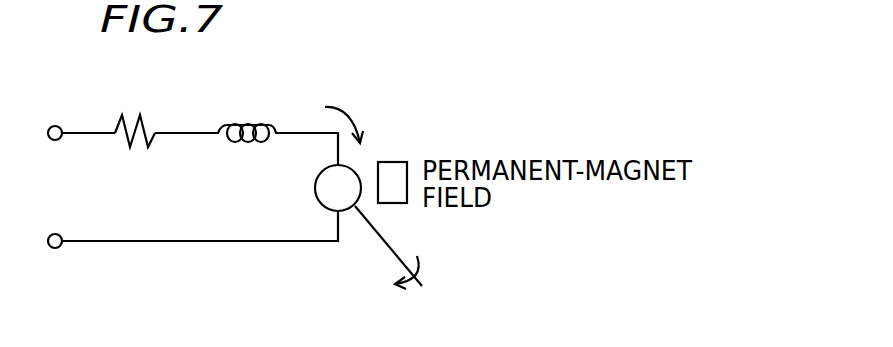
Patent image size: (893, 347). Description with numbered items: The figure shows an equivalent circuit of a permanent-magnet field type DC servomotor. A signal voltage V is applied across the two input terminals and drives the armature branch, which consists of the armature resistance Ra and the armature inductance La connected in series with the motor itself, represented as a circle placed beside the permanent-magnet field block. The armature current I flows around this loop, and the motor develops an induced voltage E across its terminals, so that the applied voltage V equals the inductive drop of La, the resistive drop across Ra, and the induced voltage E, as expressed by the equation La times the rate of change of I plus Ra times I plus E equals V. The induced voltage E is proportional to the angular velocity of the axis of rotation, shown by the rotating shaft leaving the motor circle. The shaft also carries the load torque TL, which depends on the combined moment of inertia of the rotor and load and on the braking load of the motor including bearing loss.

The signal voltage V is at (55, 141).
The armature resistance Ra is at (135, 114).
The armature inductance La is at (247, 111).
The induced voltage E is at (298, 134).
The armature current I is at (344, 113).
The load torque TL is at (426, 266).